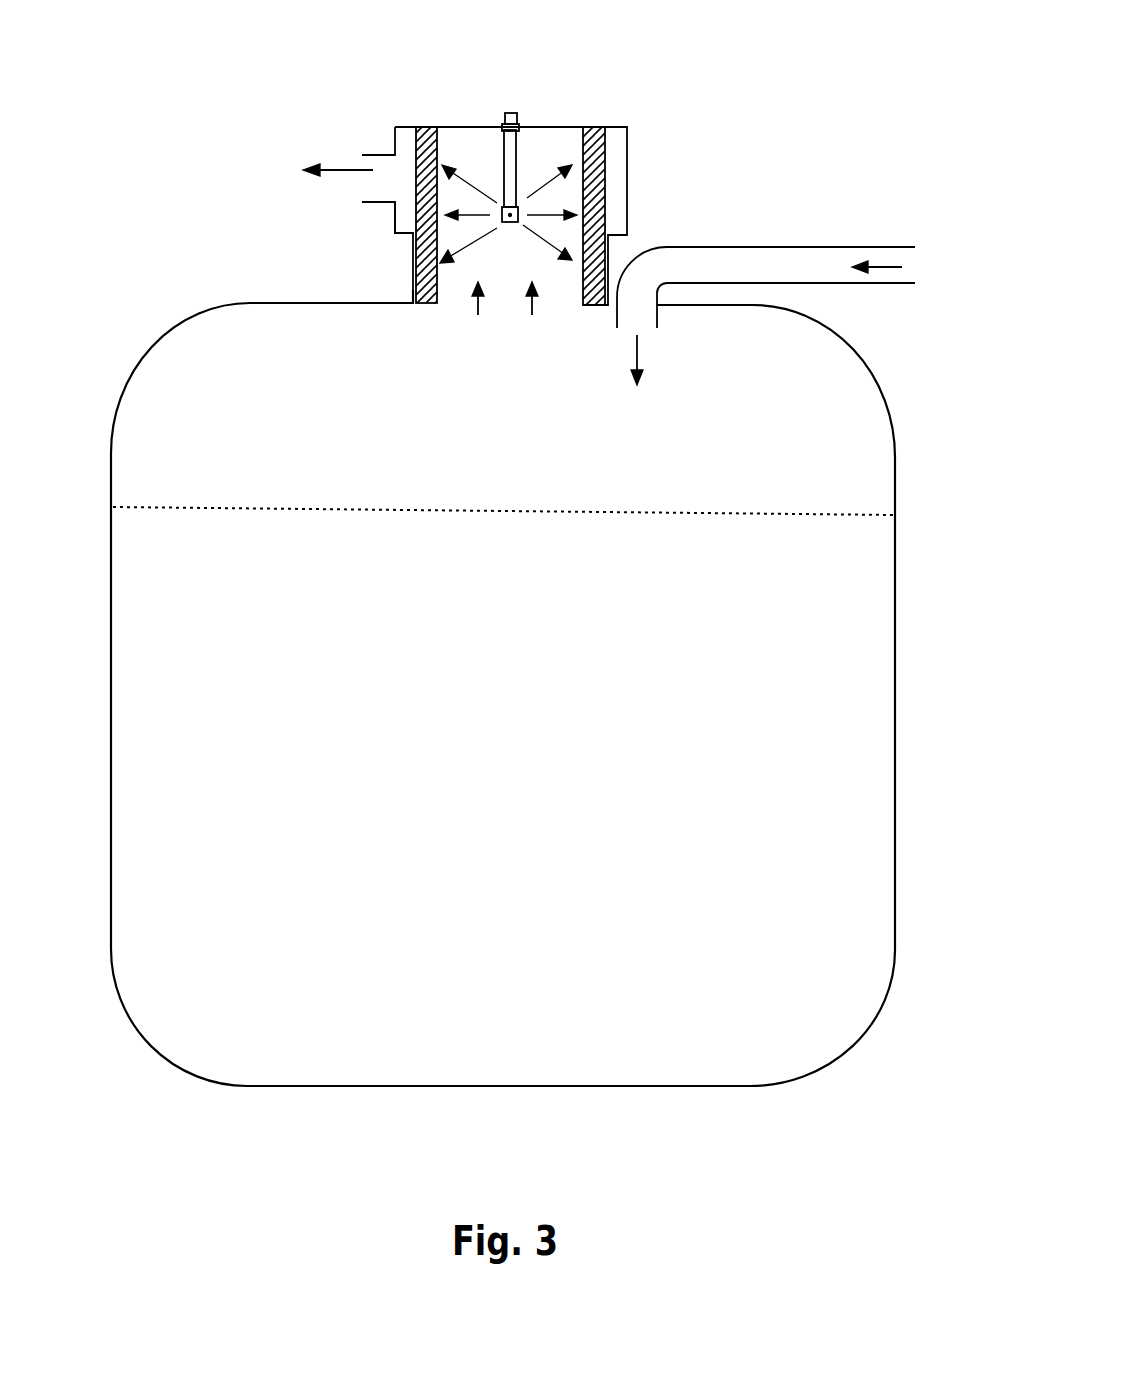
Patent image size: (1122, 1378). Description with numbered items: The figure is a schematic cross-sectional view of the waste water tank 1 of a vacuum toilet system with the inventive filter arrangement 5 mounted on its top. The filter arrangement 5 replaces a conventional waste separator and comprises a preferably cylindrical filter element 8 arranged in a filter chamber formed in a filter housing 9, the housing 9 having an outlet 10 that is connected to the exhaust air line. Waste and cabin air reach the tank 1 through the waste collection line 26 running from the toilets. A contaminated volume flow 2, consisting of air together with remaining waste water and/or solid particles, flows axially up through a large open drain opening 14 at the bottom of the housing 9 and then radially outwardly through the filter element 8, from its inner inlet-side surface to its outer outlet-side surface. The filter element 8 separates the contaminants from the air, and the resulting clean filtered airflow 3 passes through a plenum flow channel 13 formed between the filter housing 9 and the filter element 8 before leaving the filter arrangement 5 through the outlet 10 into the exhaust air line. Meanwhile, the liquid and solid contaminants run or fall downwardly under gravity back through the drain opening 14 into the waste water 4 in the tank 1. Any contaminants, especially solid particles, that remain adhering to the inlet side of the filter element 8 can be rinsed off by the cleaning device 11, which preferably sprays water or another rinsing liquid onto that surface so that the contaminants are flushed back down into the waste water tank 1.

The waste water tank 1 is at (183, 265).
The contaminated volume flow 2 is at (505, 331).
The clean filtered airflow 3 is at (335, 200).
The waste water 4 is at (491, 591).
The filter arrangement 5 is at (690, 158).
The filter element 8 is at (422, 130).
The filter housing 9 is at (628, 145).
The outlet 10 is at (390, 150).
The cleaning device 11 is at (515, 115).
The plenum flow channel 13 is at (403, 212).
The drain opening 14 is at (453, 306).
The waste collection line 26 is at (737, 247).